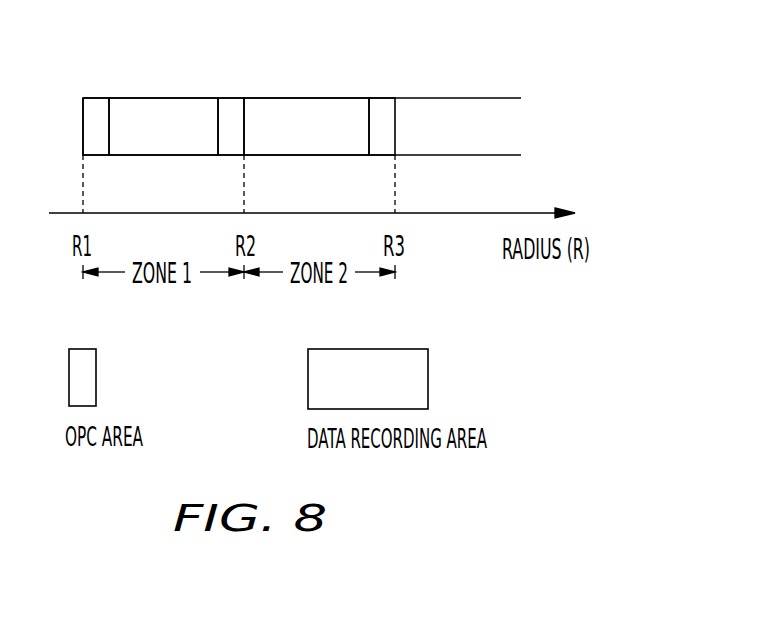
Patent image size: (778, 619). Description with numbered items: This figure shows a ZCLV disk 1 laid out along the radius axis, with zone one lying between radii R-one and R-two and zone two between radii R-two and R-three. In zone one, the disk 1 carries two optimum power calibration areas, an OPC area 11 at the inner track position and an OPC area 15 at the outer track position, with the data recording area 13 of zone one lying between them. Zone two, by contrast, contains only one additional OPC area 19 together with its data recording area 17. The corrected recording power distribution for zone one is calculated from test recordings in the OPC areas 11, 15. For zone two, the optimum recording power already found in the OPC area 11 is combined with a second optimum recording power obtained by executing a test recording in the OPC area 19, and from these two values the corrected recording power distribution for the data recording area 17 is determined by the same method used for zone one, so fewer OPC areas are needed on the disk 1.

The ZCLV disk 1 is at (497, 157).
The OPC area 11 is at (100, 104).
The data recording area 13 is at (161, 110).
The OPC area 15 is at (233, 107).
The data recording area 17 is at (307, 107).
The OPC area 19 is at (387, 107).